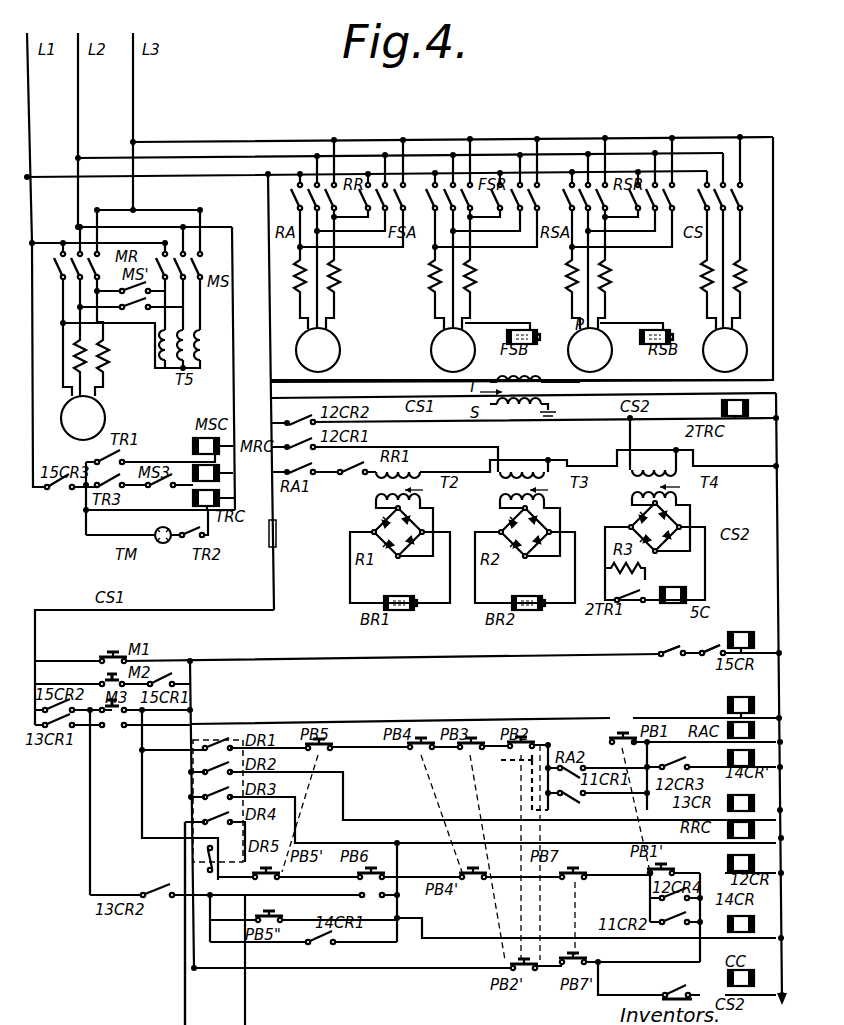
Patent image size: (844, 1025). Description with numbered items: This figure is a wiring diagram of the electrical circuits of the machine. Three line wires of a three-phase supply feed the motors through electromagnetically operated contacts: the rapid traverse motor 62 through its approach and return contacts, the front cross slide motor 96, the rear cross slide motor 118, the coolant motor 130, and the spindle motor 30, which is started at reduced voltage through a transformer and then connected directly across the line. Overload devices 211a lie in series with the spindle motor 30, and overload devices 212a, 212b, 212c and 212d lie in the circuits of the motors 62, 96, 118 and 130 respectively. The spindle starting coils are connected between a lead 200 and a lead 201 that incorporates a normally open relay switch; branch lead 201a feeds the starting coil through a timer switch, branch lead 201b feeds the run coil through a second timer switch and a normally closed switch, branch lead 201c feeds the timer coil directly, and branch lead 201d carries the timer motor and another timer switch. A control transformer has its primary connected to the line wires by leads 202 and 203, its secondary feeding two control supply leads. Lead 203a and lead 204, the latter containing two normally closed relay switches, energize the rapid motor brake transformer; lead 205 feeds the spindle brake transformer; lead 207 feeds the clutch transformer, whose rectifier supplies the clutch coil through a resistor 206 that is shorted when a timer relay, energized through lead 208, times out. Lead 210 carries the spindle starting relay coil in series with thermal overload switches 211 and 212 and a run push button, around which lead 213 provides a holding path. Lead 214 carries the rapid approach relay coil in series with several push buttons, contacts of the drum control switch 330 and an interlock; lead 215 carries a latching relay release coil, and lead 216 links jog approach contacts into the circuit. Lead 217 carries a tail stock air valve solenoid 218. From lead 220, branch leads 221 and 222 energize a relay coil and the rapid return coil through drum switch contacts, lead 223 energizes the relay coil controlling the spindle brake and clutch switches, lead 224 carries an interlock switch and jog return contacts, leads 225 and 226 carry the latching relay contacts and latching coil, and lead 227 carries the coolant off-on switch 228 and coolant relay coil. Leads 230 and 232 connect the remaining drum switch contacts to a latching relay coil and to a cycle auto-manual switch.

The lead 202 is at (772, 152).
The lead 203 is at (268, 228).
The lead 203a is at (595, 460).
The overload device 212a is at (339, 281).
The overload device 212b is at (476, 281).
The overload device 212c is at (608, 277).
The overload device 212d is at (700, 282).
The rapid traverse motor 62 is at (339, 352).
The front cross slide motor 96 is at (431, 347).
The rear cross slide motor 118 is at (604, 360).
The coolant motor 130 is at (710, 360).
The spindle motor 30 is at (100, 416).
The lead 200 is at (233, 394).
The lead 201 is at (58, 409).
The branch lead 201a is at (150, 454).
The second branch lead 201b is at (134, 498).
The third branch lead 201c is at (160, 518).
The fourth branch lead 201d is at (90, 538).
The overload devices 211a is at (130, 345).
The lead 204 is at (348, 475).
The lead 205 is at (439, 448).
The resistor 206 is at (648, 568).
The lead 207 is at (627, 430).
The lead 208 is at (700, 412).
The lead 210 is at (382, 668).
The thermal overload switch 211 is at (711, 644).
The thermal overload switch 212 is at (658, 646).
The lead 213 is at (80, 684).
The lead 214 is at (143, 713).
The lead 215 is at (694, 758).
The lead 216 is at (525, 807).
The lead 217 is at (490, 717).
The tail stock air valve solenoid 218 is at (732, 698).
The lead 220 is at (195, 695).
The branch lead 221 is at (403, 817).
The branch lead 222 is at (310, 848).
The lead 223 is at (145, 850).
The lead 224 is at (88, 790).
The lead 225 is at (345, 950).
The lead 226 is at (455, 945).
The branch lead 227 is at (306, 970).
The coolant off-on switch 228 is at (670, 991).
The lead 230 is at (250, 1010).
The lead 232 is at (182, 989).
The drum control switch 330 is at (189, 798).